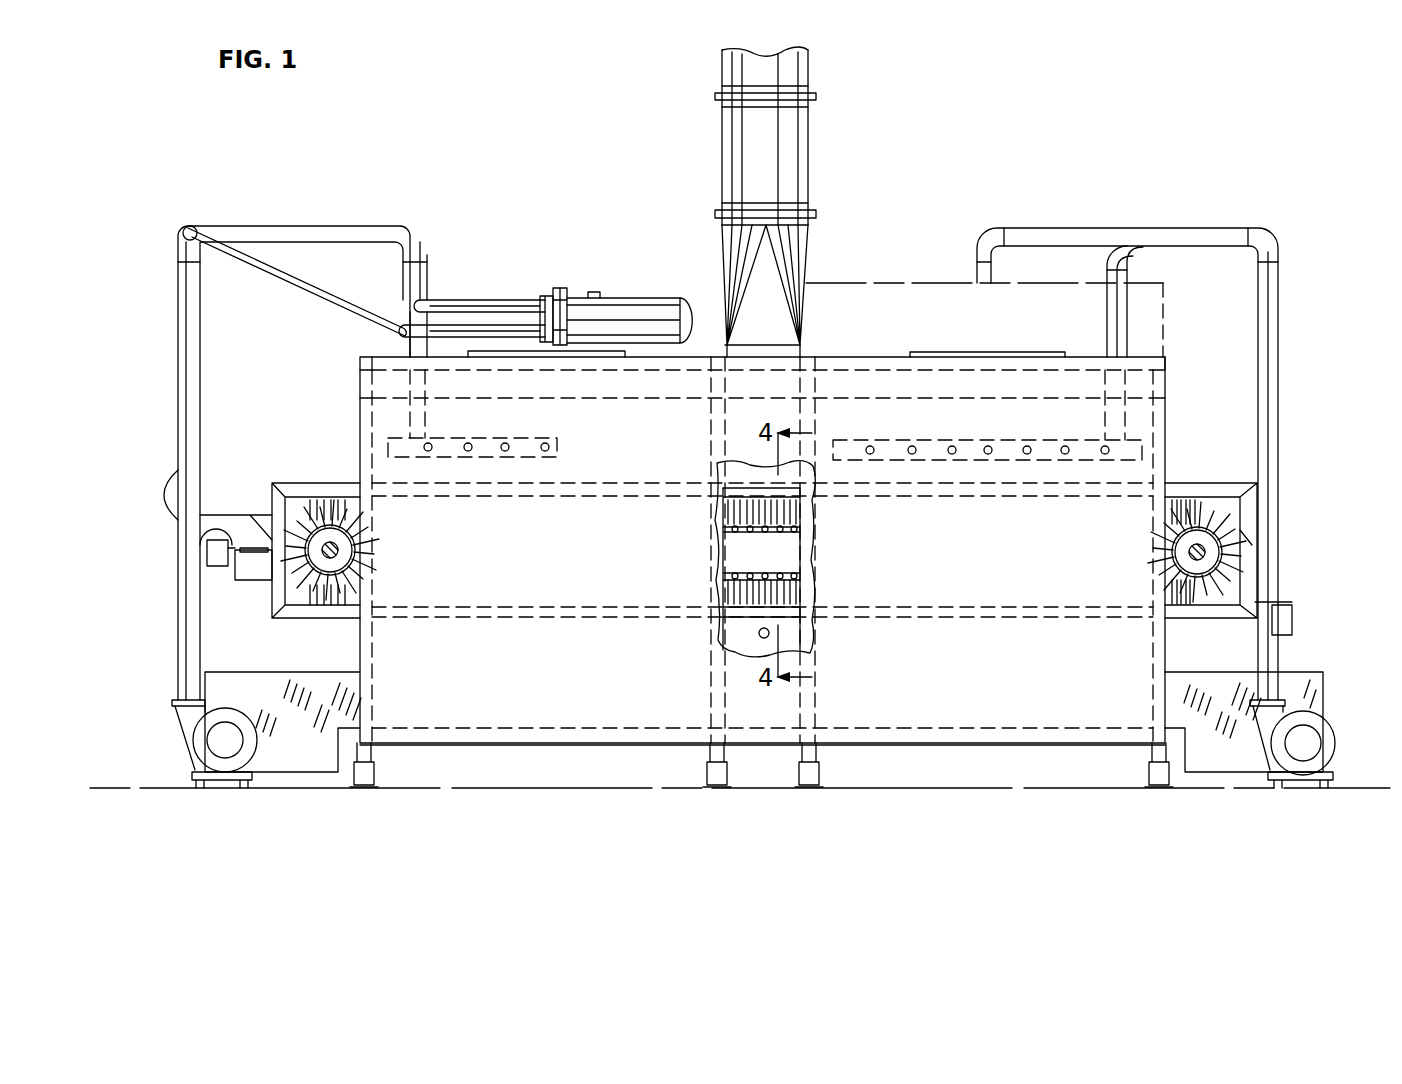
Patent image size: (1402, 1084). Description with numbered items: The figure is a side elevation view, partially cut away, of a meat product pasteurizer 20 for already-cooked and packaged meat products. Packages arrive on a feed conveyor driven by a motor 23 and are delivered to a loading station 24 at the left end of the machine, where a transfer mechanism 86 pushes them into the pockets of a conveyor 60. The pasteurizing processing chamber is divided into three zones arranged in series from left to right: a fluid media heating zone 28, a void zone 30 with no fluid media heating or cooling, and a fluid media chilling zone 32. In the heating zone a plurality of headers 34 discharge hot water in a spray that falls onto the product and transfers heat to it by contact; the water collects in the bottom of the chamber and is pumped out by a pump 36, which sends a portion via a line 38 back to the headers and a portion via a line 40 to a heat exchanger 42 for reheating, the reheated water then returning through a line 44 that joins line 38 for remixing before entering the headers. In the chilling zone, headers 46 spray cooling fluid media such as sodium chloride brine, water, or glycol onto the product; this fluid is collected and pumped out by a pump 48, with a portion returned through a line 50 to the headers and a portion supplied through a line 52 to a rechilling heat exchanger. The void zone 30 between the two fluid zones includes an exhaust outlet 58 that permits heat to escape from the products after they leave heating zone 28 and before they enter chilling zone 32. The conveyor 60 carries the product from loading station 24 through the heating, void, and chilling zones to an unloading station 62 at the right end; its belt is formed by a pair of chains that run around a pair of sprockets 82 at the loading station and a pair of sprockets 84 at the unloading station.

The meat product pasteurizer 20 is at (546, 294).
The motor 23 is at (217, 568).
The loading station 24 is at (274, 538).
The fluid media heating zone 28 is at (629, 440).
The void zone 30 is at (761, 433).
The fluid media chilling zone 32 is at (953, 437).
The headers 34 is at (440, 446).
The pump 36 is at (213, 738).
The line 38 is at (350, 226).
The line 40 is at (305, 292).
The heat exchanger 42 is at (612, 298).
The line 44 is at (507, 302).
The headers 46 is at (985, 441).
The pump 48 is at (1313, 738).
The line 50 is at (1130, 282).
The line 52 is at (1112, 232).
The exhaust outlet 58 is at (808, 165).
The conveyor 60 is at (365, 532).
The unloading station 62 is at (1252, 535).
The sprockets 82 is at (345, 560).
The sprockets 84 is at (1185, 560).
The transfer mechanism 86 is at (255, 562).